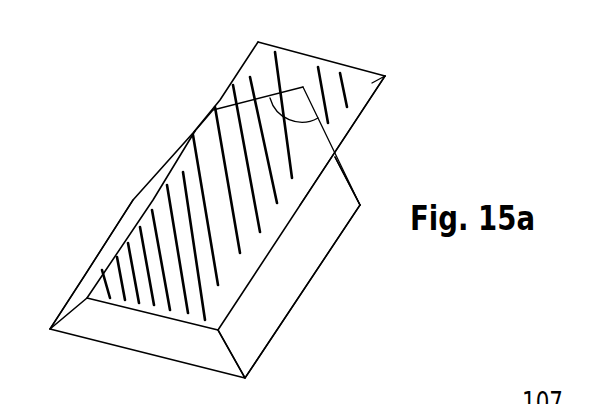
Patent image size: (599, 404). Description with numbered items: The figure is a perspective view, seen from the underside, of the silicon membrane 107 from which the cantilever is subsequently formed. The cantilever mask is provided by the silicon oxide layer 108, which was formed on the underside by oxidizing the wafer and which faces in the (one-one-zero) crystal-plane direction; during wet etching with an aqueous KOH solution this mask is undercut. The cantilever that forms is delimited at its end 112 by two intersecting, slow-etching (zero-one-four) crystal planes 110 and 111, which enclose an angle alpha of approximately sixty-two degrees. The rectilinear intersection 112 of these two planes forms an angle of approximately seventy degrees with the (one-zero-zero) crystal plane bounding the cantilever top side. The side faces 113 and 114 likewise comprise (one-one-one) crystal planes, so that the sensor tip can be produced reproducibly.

The silicon membrane 107 is at (263, 263).
The silicon oxide layer 108 is at (385, 76).
The slow-etching crystal plane 110 is at (215, 107).
The slow-etching crystal plane 111 is at (336, 157).
The end of the cantilever 112 is at (303, 87).
The side face 113 is at (300, 263).
The side face 114 is at (132, 213).